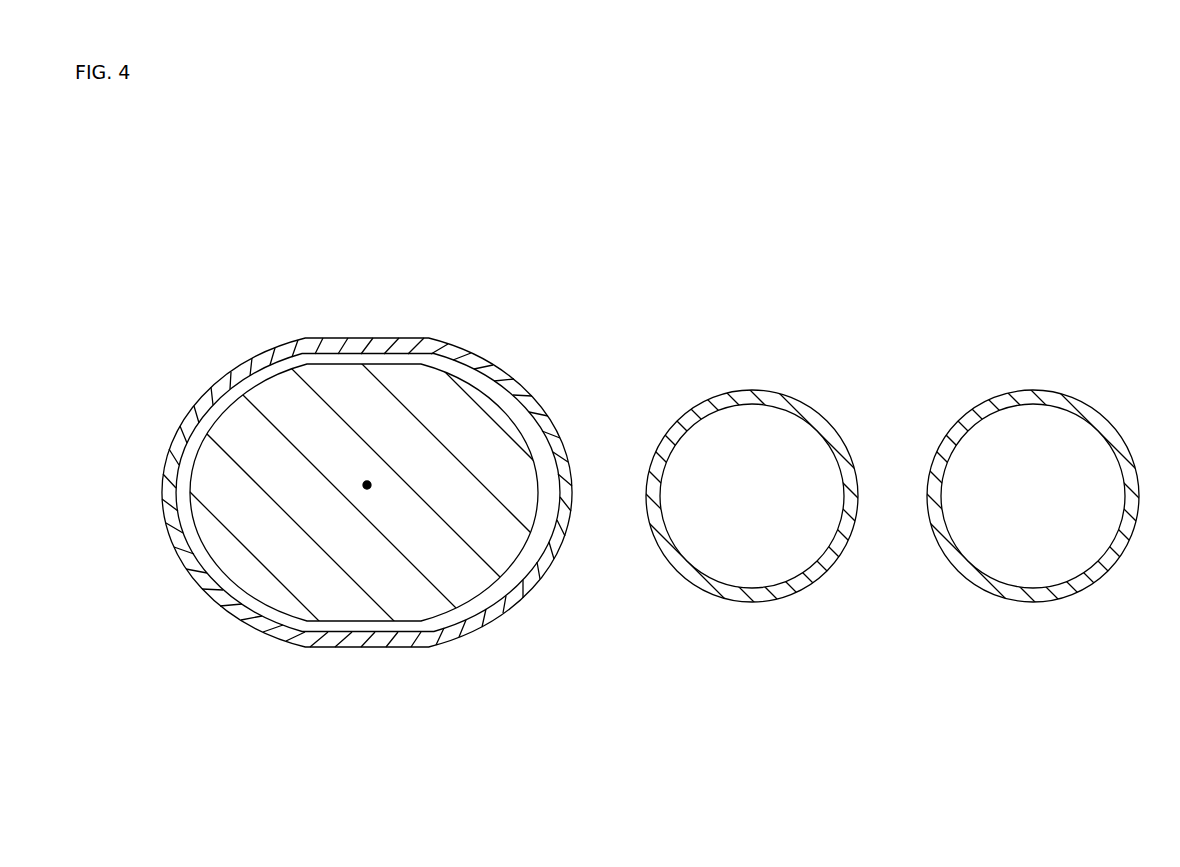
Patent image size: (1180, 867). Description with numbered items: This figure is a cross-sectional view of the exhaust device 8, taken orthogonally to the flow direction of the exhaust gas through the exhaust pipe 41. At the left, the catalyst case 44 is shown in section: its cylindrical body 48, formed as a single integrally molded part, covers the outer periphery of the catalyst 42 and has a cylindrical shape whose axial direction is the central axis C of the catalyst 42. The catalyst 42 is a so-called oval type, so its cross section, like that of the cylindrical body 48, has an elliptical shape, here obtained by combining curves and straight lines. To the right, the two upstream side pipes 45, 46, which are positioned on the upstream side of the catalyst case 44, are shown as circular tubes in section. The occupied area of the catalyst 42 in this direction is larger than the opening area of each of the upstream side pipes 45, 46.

The exhaust device 8 is at (222, 303).
The exhaust pipe 41 is at (258, 323).
The catalyst 42 is at (380, 625).
The catalyst case 44 is at (493, 343).
The cylindrical body 48 is at (529, 389).
The upstream side pipe 45 is at (818, 398).
The upstream side pipe 46 is at (1130, 418).
The central axis C is at (367, 481).